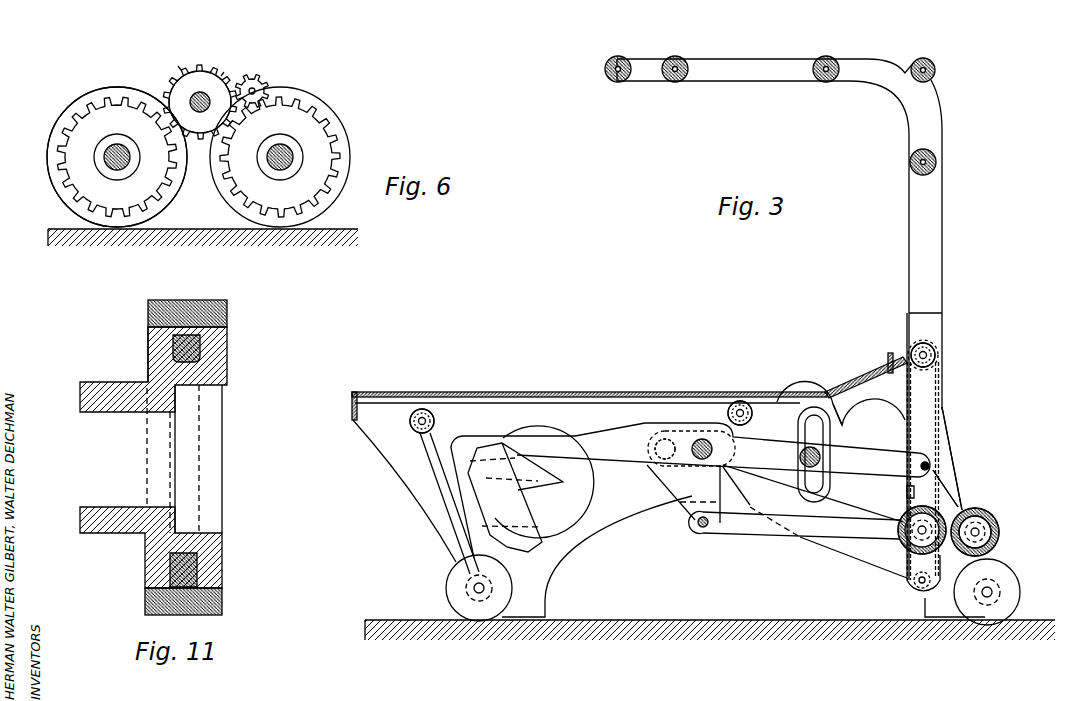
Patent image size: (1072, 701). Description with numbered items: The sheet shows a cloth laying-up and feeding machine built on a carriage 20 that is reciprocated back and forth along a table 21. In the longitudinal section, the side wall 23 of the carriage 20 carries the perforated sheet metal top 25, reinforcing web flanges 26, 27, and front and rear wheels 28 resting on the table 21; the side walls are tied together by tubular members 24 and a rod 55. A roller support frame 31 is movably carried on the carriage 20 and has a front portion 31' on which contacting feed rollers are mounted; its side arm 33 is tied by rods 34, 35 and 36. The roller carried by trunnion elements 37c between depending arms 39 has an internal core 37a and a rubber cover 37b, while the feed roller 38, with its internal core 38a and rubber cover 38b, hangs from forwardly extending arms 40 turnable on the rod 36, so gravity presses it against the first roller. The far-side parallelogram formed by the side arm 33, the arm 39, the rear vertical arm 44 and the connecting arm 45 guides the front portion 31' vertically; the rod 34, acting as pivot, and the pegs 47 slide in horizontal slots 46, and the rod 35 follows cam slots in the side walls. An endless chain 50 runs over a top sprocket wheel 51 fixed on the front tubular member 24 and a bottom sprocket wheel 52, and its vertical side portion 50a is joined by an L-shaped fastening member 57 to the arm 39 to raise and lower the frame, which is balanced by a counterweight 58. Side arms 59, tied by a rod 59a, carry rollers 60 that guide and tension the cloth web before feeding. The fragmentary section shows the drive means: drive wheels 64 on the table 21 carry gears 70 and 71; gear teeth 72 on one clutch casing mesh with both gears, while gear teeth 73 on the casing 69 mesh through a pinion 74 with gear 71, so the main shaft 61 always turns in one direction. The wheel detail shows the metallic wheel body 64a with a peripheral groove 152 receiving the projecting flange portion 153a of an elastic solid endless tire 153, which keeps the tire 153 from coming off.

In FIG. 3, the carriage 20 is at (460, 392).
In FIG. 6, the table 21 is at (344, 229).
In FIG. 3, the table 21 is at (722, 641).
In FIG. 3, the side wall 23 is at (567, 538).
In FIG. 3, the tubular member 24 is at (418, 432).
In FIG. 3, the perforated sheet metal top 25 is at (590, 392).
In FIG. 3, the web flange 26 is at (447, 485).
In FIG. 3, the web flange 27 is at (502, 402).
In FIG. 3, the wheel 28 is at (456, 577).
In FIG. 3, the roller support frame 31 is at (830, 454).
In FIG. 3, the front portion 31' is at (869, 426).
In FIG. 3, the side arm 33 is at (860, 464).
In FIG. 3, the rod 34 is at (706, 439).
In FIG. 3, the rod 35 is at (800, 457).
In FIG. 3, the rod 36 is at (940, 462).
In FIG. 3, the internal core 37a is at (905, 522).
In FIG. 3, the rubber cover 37b is at (905, 547).
In FIG. 3, the trunnion element 37c is at (935, 550).
In FIG. 3, the feed roller 38 is at (985, 513).
In FIG. 3, the internal core 38a is at (1000, 541).
In FIG. 3, the rubber cover 38b is at (1000, 529).
In FIG. 3, the arm 39 is at (923, 492).
In FIG. 3, the arm 40 is at (950, 502).
In FIG. 3, the rear vertical arm 44 is at (710, 493).
In FIG. 3, the connecting arm 45 is at (805, 523).
In FIG. 3, the horizontal slot 46 is at (689, 438).
In FIG. 3, the peg 47 is at (664, 438).
In FIG. 3, the endless chain 50 is at (942, 393).
In FIG. 3, the side portion 50a is at (907, 394).
In FIG. 3, the top sprocket wheel 51 is at (940, 361).
In FIG. 3, the bottom sprocket wheel 52 is at (912, 587).
In FIG. 3, the rod 55 is at (409, 418).
In FIG. 3, the L-shaped fastening member 57 is at (905, 495).
In FIG. 3, the counterweight 58 is at (522, 517).
In FIG. 3, the side arm 59 is at (943, 252).
In FIG. 3, the rod 59a is at (935, 63).
In FIG. 3, the roller 60 is at (668, 58).
In FIG. 6, the main shaft 61 is at (207, 97).
In FIG. 6, the drive wheel 64 is at (48, 150).
In FIG. 11, the drive wheel 64 is at (215, 598).
In FIG. 11, the wheel body 64a is at (214, 567).
In FIG. 6, the casing 69 is at (177, 88).
In FIG. 6, the gear 70 is at (72, 121).
In FIG. 6, the gear 71 is at (325, 119).
In FIG. 6, the gear teeth 72 is at (221, 74).
In FIG. 6, the gear teeth 73 is at (178, 68).
In FIG. 6, the pinion 74 is at (258, 85).
In FIG. 11, the peripheral groove 152 is at (200, 357).
In FIG. 11, the solid endless tire 153 is at (186, 304).
In FIG. 11, the projecting flange portion 153a is at (172, 346).